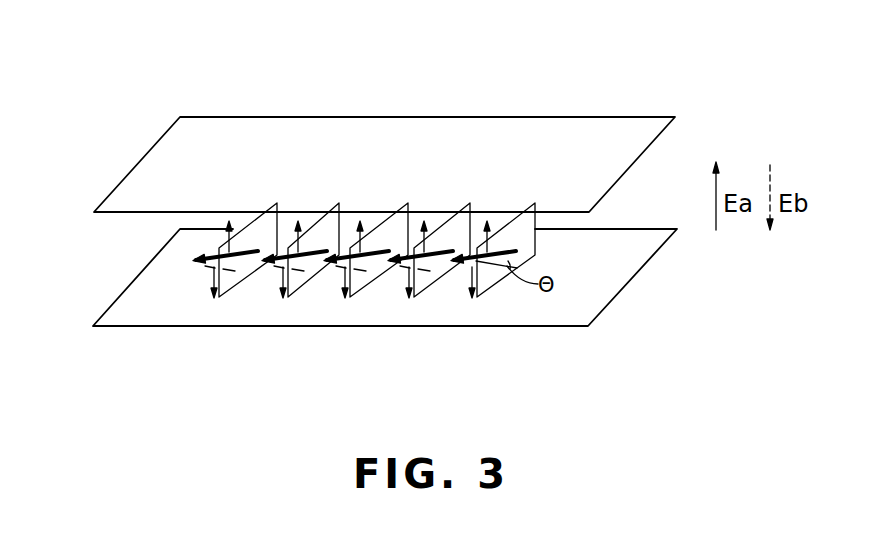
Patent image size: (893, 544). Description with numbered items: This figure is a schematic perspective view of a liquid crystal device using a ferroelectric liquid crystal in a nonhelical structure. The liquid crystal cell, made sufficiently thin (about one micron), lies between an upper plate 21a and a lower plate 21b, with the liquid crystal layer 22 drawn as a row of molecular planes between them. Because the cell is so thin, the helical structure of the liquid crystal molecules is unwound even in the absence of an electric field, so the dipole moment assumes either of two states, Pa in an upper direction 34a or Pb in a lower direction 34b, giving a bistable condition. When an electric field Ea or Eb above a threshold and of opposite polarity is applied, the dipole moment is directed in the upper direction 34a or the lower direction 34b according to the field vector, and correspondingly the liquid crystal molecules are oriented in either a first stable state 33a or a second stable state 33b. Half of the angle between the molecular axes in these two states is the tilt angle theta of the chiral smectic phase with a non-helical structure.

The upper substrate 21a is at (640, 116).
The lower substrate 21b is at (618, 285).
The liquid crystal layer / molecular planes 22 is at (535, 226).
The first stable state 33a is at (256, 254).
The second stable state 33b is at (231, 276).
The upper direction 34a is at (228, 227).
The lower direction 34b is at (213, 272).